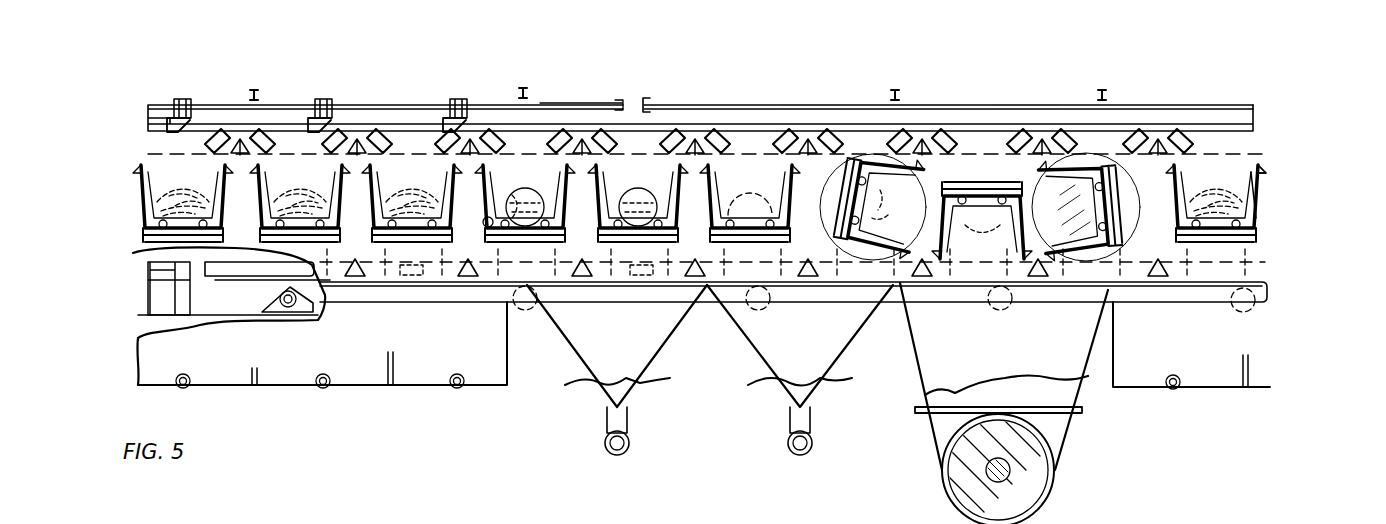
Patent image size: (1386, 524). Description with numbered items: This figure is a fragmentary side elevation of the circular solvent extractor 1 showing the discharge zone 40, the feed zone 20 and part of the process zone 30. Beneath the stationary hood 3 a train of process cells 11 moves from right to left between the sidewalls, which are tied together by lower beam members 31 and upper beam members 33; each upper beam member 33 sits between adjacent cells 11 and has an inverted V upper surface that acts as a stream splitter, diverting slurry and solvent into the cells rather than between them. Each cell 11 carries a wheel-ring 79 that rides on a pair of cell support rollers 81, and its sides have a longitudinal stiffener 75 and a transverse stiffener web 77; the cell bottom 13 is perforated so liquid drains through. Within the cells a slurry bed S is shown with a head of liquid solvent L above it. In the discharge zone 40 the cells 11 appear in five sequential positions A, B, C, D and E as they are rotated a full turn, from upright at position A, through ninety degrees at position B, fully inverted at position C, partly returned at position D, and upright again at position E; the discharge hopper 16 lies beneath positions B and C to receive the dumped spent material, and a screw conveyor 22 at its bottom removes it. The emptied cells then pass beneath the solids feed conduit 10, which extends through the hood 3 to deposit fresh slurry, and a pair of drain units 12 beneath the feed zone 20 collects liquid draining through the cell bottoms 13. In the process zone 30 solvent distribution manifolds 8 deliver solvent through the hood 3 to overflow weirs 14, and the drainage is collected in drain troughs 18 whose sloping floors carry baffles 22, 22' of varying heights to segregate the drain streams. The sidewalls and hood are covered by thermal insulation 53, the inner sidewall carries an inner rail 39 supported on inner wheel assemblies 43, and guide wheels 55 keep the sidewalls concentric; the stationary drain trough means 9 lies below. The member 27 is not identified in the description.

The circular solvent extractor 1 is at (918, 101).
The stationary hood 3 is at (817, 103).
The solvent distribution manifold 8 is at (181, 100).
The drain trough means 9 is at (857, 356).
The solids feed conduit 10 is at (638, 98).
The process cell 11 is at (147, 232).
The drain unit 12 is at (584, 373).
The cell bottom 13 is at (415, 240).
The overflow weir 14 is at (168, 124).
The discharge hopper 16 is at (1084, 372).
The drain trough 18 is at (481, 388).
The feed zone 20 is at (717, 72).
The baffle 22 is at (790, 413).
The baffle 22' is at (253, 395).
The I-beam support 27 is at (256, 89).
The process zone 30 is at (386, 102).
The lower beam member 31 is at (358, 278).
The upper beam member 33 is at (230, 140).
The inner rail 39 is at (248, 286).
The discharge zone 40 is at (1025, 102).
The inner wheel assembly 43 is at (263, 292).
The thermal insulation 53 is at (541, 104).
The guide wheel 55 is at (143, 266).
The longitudinal stiffener 75 is at (1259, 174).
The transverse stiffener web 77 is at (1238, 185).
The wheel-ring 79 is at (480, 227).
The cell support roller 81 is at (500, 212).
The upright cell position A is at (1211, 166).
The ninety-degree rotated cell position B is at (1085, 167).
The inverted cell position C is at (981, 176).
The partially returned cell position D is at (861, 162).
The returned upright cell position E is at (749, 160).
The liquid solvent level L is at (170, 175).
The slurry bed S is at (162, 193).